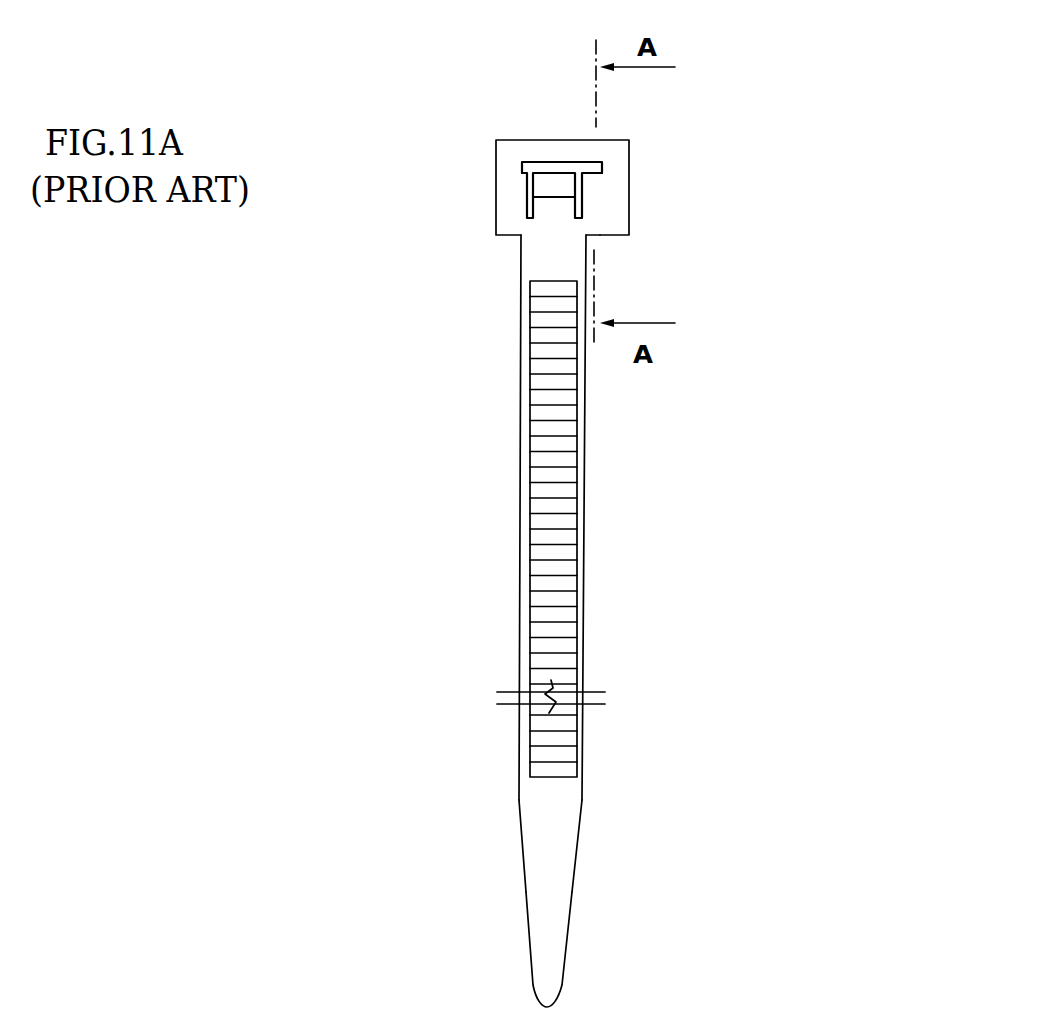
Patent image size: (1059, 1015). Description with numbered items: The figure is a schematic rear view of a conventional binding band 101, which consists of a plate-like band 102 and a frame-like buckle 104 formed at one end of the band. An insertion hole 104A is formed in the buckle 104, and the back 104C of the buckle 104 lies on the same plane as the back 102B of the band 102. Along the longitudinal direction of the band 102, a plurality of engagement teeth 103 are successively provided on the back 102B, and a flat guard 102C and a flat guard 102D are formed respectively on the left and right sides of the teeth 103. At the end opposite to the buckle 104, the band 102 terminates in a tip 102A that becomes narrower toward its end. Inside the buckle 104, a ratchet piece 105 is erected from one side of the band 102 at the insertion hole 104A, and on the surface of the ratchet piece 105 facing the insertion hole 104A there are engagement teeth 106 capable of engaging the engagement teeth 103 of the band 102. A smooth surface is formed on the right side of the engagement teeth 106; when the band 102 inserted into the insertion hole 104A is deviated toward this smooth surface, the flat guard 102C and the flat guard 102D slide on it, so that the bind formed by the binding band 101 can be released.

The binding band 101 is at (477, 151).
The band 102 is at (594, 581).
The tip 102A is at (552, 932).
The back of the band 102B is at (557, 813).
The flat guard 102C is at (517, 643).
The flat guard 102D is at (582, 660).
The engagement teeth 103 is at (537, 555).
The buckle 104 is at (643, 195).
The insertion hole 104A is at (531, 164).
The back of the buckle 104C is at (603, 227).
The ratchet piece 105 is at (545, 216).
The engagement teeth 106 is at (552, 170).